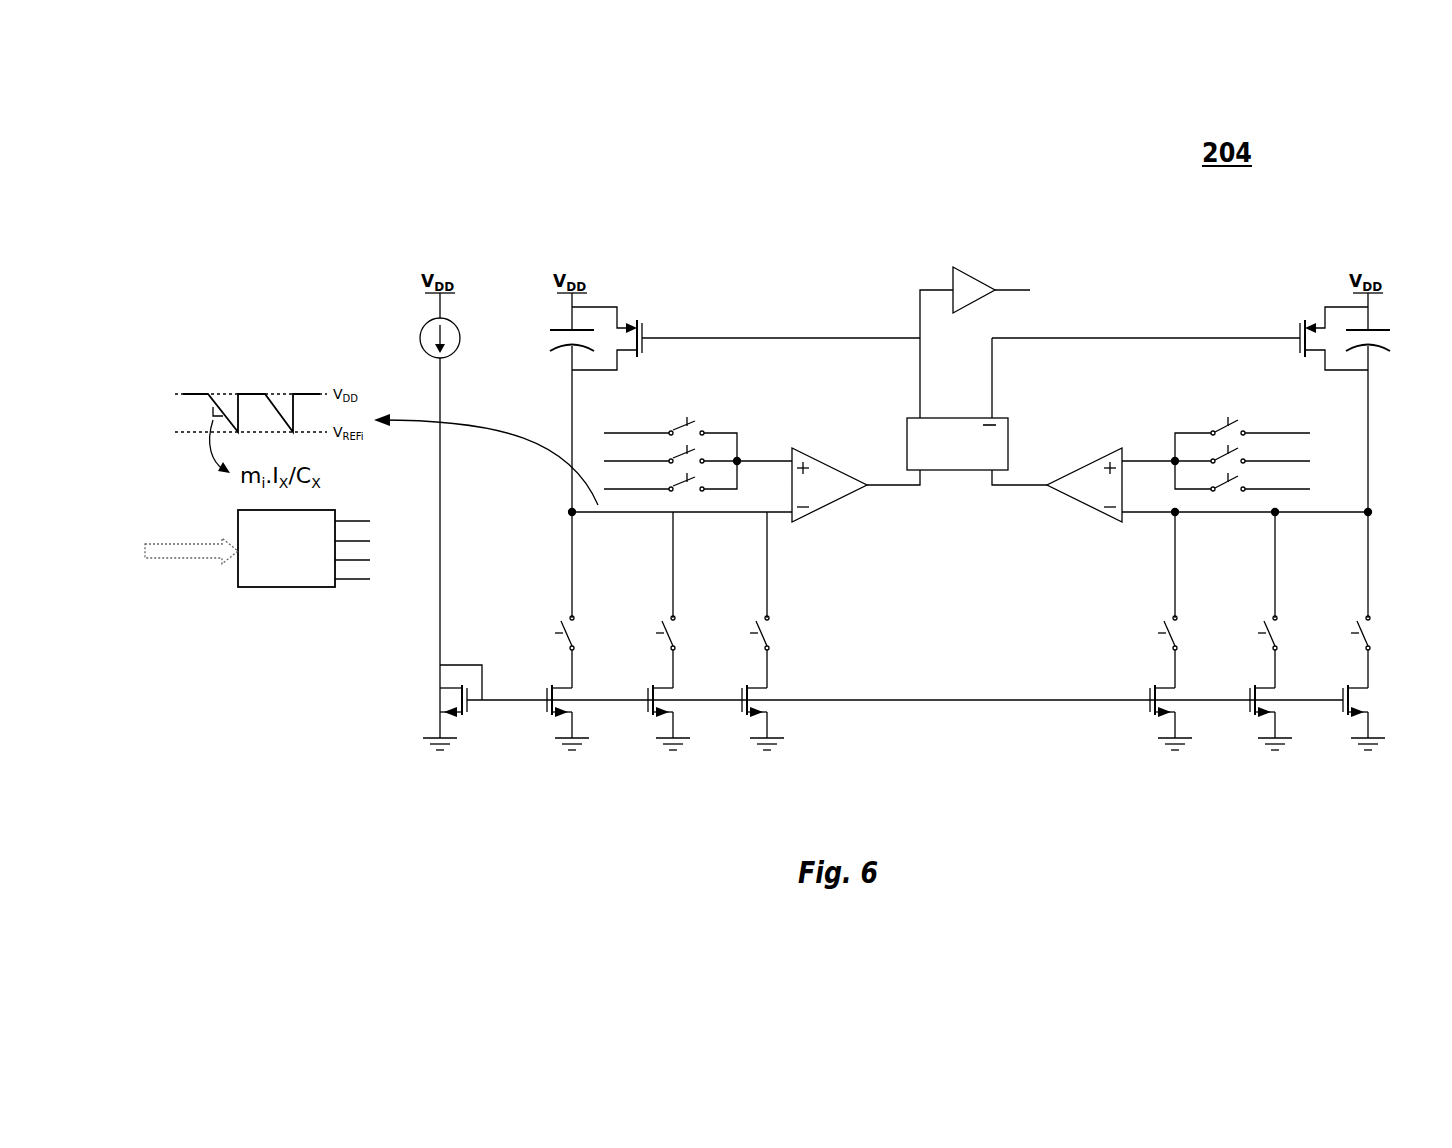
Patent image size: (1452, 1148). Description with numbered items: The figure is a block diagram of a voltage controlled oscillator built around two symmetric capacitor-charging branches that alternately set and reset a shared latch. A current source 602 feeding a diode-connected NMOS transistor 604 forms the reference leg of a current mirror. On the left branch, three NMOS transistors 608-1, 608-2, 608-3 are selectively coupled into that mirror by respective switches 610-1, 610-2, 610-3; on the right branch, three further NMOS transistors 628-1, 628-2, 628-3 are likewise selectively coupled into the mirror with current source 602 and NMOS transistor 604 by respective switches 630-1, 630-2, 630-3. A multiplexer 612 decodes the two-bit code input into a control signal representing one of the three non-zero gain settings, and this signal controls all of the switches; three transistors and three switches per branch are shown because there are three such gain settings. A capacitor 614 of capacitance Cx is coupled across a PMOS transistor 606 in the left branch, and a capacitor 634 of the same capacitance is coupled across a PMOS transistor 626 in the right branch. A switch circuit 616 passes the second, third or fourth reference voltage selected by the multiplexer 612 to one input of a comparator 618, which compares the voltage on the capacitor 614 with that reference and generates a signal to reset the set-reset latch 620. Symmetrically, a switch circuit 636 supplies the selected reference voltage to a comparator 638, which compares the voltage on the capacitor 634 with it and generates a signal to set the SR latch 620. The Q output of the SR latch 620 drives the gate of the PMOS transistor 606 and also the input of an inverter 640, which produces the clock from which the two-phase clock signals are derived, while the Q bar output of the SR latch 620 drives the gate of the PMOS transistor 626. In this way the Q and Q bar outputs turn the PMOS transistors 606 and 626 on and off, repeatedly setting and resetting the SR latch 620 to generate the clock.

The current source 602 is at (459, 355).
The NMOS transistor 604 is at (440, 713).
The PMOS transistor 606 is at (648, 352).
The NMOS transistor 608-1 is at (545, 703).
The NMOS transistor 608-2 is at (646, 703).
The NMOS transistor 608-3 is at (740, 703).
The switch 610-1 is at (570, 618).
The switch 610-2 is at (672, 616).
The switch 610-3 is at (766, 616).
The multiplexer 612 is at (260, 590).
The capacitor 614 is at (556, 343).
The switch circuit 616 is at (713, 432).
The comparator 618 is at (838, 507).
The set-reset (SR) latch 620 is at (906, 420).
The PMOS transistor 626 is at (1299, 322).
The NMOS transistor 628-1 is at (1148, 703).
The NMOS transistor 628-2 is at (1248, 703).
The NMOS transistor 628-3 is at (1341, 703).
The switch 630-1 is at (1174, 616).
The switch 630-2 is at (1274, 616).
The switch 630-3 is at (1367, 616).
The capacitor 634 is at (1397, 345).
The switch circuit 636 is at (1212, 430).
The comparator 638 is at (1097, 513).
The inverter 640 is at (952, 268).